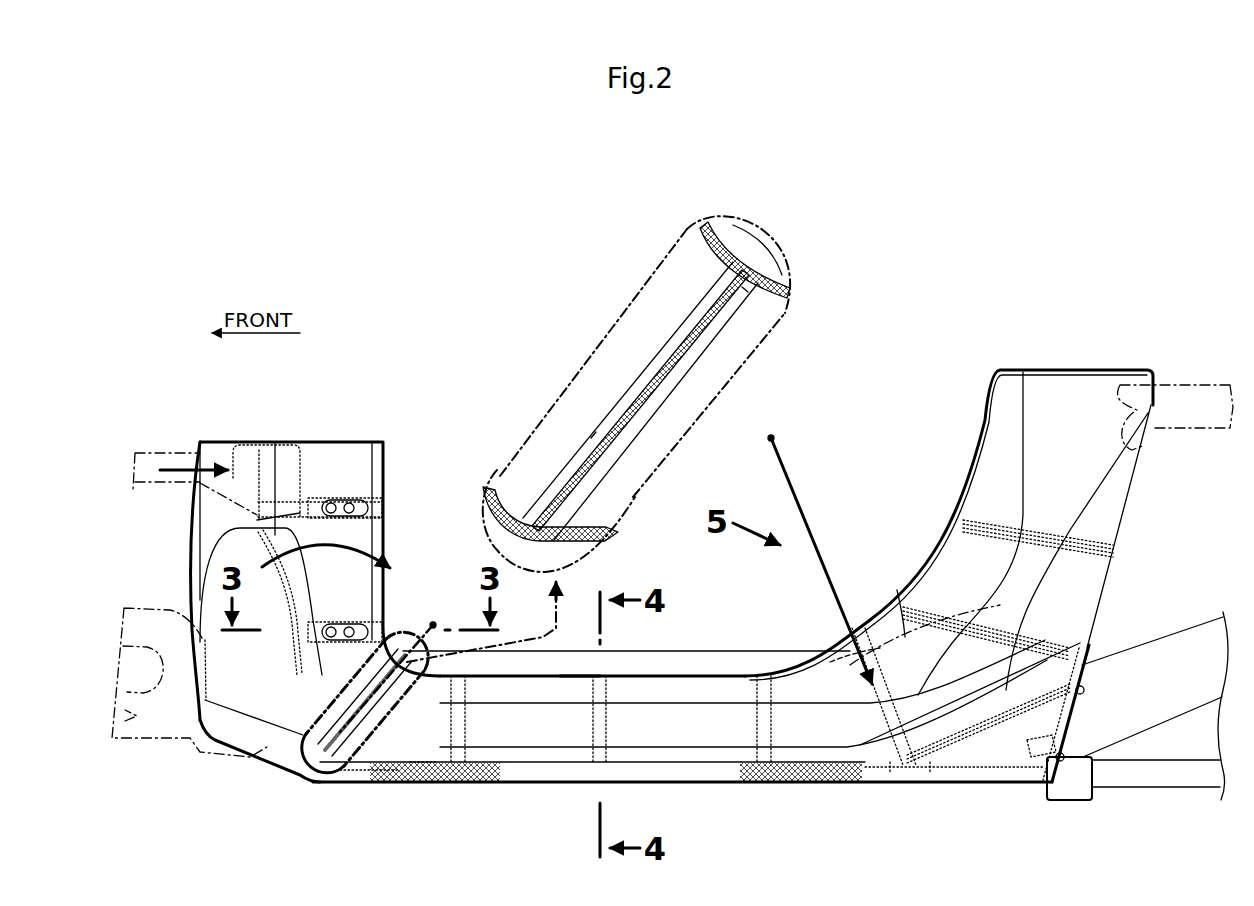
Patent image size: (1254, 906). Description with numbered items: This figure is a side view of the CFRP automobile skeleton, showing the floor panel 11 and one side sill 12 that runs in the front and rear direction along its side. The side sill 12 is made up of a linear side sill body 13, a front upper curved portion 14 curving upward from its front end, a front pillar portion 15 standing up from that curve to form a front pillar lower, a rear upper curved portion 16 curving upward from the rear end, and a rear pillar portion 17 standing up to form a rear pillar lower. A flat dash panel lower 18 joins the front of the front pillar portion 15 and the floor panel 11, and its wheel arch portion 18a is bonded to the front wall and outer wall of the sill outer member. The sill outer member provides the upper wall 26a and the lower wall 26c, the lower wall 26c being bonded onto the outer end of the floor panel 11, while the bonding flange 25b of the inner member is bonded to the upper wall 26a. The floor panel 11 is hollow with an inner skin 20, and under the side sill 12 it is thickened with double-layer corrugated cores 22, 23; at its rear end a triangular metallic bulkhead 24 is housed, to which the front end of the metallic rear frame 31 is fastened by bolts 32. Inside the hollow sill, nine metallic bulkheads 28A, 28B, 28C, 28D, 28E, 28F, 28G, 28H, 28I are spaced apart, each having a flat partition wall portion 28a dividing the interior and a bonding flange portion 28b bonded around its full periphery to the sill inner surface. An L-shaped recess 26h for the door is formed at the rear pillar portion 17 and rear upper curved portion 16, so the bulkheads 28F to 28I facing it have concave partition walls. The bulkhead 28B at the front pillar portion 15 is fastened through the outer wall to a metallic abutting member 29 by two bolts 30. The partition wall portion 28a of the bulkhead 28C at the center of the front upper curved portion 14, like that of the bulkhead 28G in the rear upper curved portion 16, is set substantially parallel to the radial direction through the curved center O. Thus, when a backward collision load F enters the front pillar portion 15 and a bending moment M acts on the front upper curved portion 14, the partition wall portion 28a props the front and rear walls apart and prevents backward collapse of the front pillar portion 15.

The floor panel 11 is at (552, 790).
The side sill 12 is at (693, 668).
The side sill body 13 is at (582, 668).
The front upper curved portion 14 is at (412, 648).
The front pillar portion 15 is at (392, 519).
The rear upper curved portion 16 is at (868, 610).
The rear pillar portion 17 is at (962, 472).
The dash panel lower 18 is at (180, 540).
The wheel arch portion 18a is at (278, 683).
The inner skin 20 is at (490, 532).
The corrugated core 22 is at (482, 760).
The corrugated core 23 is at (478, 785).
The bulkhead 24 is at (987, 765).
The bonding flange 25b is at (752, 272).
The upper wall 26a is at (727, 260).
The lower wall 26c is at (583, 528).
The recess 26h is at (897, 592).
The bulkhead 28A is at (310, 497).
The bulkhead 28B is at (317, 604).
The bulkhead 28C is at (377, 786).
The bulkhead 28D is at (422, 783).
The bulkhead 28E is at (607, 727).
The bulkhead 28F is at (757, 727).
The bulkhead 28G is at (845, 652).
The bulkhead 28H is at (937, 595).
The bulkhead 28I is at (1045, 520).
The partition wall portion 28a is at (636, 414).
The bonding flange portion 28b is at (743, 288).
The abutting member 29 is at (357, 503).
The bolt 30 is at (349, 503).
The rear frame 31 is at (1165, 630).
The bolt 32 is at (1064, 755).
The backward collision load F is at (183, 468).
The bending moment M is at (352, 548).
The curved center O is at (433, 625).